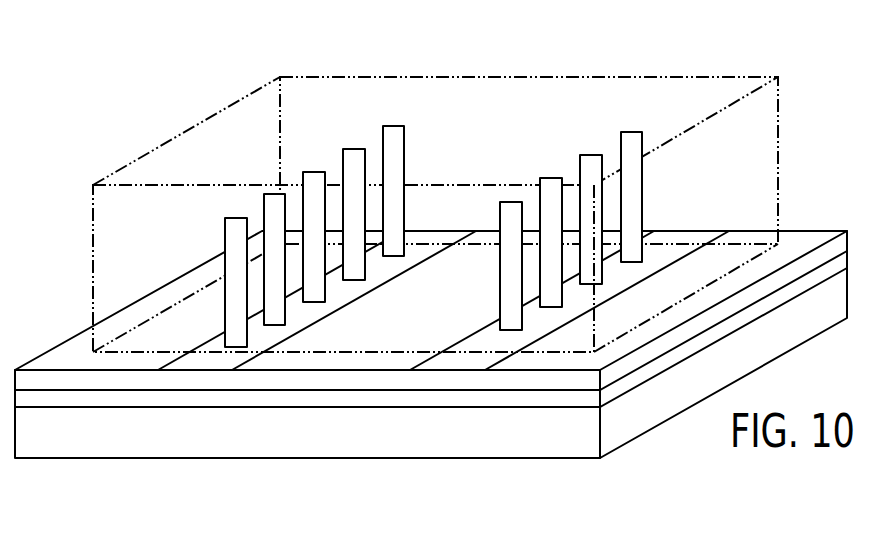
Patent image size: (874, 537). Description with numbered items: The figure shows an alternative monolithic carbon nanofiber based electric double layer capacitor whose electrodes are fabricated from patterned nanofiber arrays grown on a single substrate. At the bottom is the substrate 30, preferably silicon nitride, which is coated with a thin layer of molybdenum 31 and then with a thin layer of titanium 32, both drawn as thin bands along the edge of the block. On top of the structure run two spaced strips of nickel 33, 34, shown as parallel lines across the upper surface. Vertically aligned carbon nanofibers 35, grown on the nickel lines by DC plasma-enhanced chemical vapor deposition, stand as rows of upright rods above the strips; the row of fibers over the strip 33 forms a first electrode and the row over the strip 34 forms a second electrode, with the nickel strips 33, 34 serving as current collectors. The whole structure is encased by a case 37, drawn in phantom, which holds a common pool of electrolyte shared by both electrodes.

The substrate 30 is at (622, 425).
The thin layer of molybdenum 31 is at (512, 398).
The thin layer of titanium 32 is at (566, 378).
The nickel strip 33 is at (485, 342).
The nickel strip 34 is at (302, 315).
The vertically aligned carbon nanofibers 35 is at (405, 157).
The case 37 is at (523, 77).